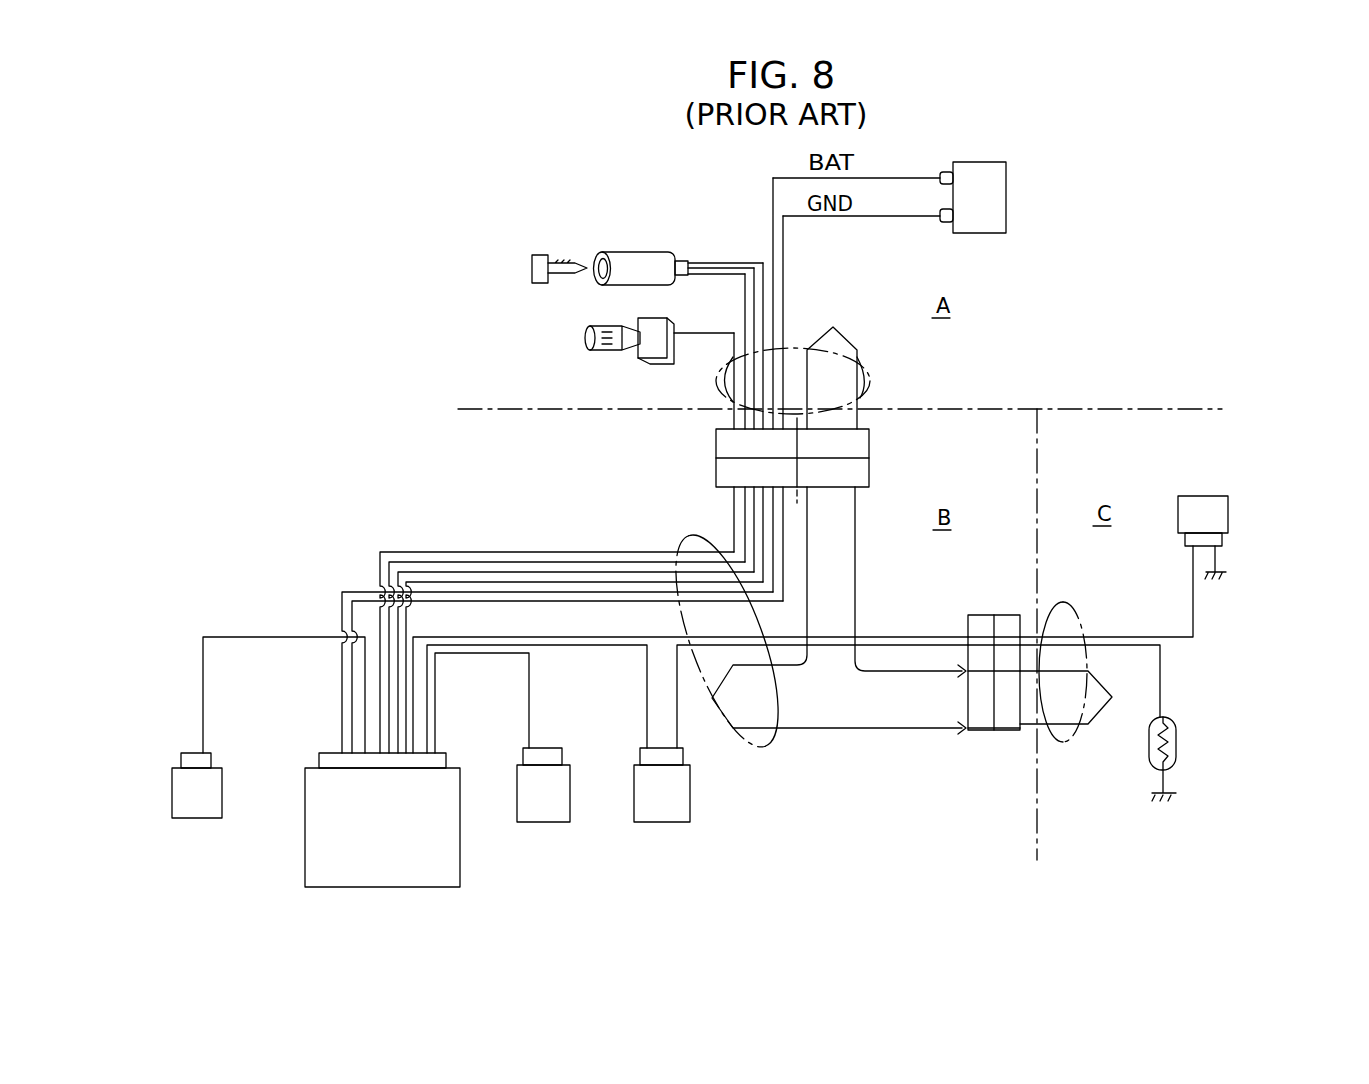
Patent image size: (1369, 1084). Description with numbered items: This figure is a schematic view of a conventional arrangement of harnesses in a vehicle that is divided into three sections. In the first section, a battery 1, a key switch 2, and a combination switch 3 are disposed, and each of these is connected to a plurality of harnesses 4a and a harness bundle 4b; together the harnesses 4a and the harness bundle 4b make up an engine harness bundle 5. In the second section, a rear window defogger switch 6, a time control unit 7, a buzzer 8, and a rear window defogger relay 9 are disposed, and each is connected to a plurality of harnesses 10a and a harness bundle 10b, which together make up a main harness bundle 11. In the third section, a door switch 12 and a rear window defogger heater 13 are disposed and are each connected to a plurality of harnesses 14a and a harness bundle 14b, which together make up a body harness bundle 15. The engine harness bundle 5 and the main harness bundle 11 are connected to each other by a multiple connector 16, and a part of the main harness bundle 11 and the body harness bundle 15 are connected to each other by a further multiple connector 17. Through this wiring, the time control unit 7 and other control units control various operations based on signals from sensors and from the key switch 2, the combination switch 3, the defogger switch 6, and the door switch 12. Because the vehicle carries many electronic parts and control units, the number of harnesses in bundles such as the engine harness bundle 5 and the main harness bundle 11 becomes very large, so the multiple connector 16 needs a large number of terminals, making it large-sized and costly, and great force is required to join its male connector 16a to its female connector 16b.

The battery 1 is at (1006, 203).
The key switch 2 is at (622, 262).
The combination switch 3 is at (587, 340).
The harnesses 4a is at (765, 277).
The harness bundle 4b is at (862, 395).
The engine harness bundle 5 is at (875, 405).
The rear window defogger switch (DEF switch) 6 is at (186, 818).
The time control unit 7 is at (400, 888).
The buzzer 8 is at (545, 822).
The rear window defogger relay (DEF relay) 9 is at (657, 823).
The harnesses 10a is at (440, 553).
The harness bundle 10b is at (800, 728).
The main harness bundle 11 is at (753, 755).
The door switch 12 is at (1200, 494).
The rear window defogger heater (DEF heater) 13 is at (1178, 745).
The harnesses 14a is at (1122, 635).
The harness bundle 14b is at (1103, 710).
The body harness bundle 15 is at (1052, 745).
The multiple connector 16 is at (829, 497).
The male connector 16a is at (870, 442).
The female connector 16b is at (858, 489).
The multiple connector 17 is at (980, 732).